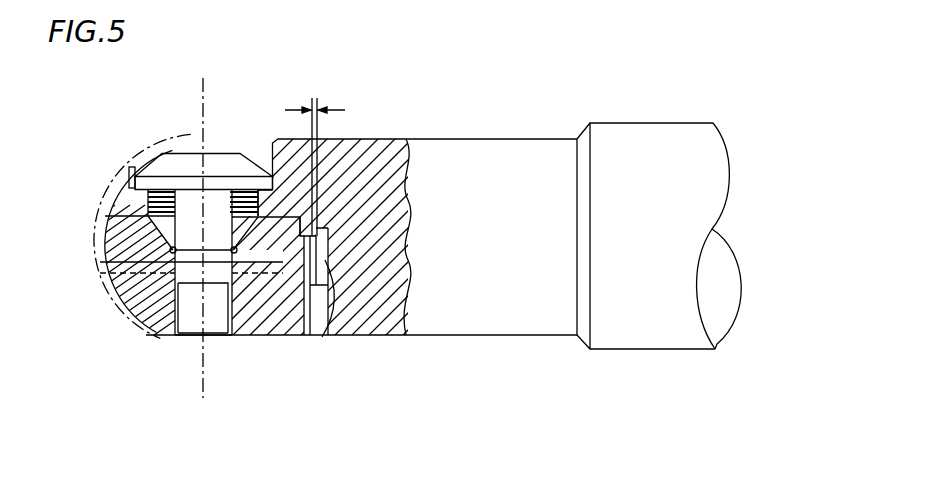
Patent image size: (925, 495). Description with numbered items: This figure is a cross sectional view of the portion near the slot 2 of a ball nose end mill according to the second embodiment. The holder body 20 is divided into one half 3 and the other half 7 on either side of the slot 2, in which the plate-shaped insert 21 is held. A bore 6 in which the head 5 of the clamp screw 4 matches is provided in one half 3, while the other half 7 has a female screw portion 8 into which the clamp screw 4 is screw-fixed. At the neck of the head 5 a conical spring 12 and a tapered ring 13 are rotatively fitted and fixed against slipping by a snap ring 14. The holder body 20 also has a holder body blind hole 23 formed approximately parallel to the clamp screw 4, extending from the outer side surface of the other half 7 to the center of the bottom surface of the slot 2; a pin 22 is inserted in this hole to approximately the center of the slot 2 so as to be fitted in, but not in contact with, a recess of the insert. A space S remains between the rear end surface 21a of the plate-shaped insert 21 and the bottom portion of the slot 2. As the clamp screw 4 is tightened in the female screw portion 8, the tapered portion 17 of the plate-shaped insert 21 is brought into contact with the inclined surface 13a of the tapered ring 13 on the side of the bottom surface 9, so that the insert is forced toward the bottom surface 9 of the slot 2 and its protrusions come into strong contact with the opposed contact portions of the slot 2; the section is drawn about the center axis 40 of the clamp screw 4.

The slot 2 is at (100, 259).
The one half 3 is at (124, 193).
The clamp screw 4 is at (190, 327).
The head 5 is at (173, 162).
The bore 6 is at (270, 150).
The other half 7 is at (115, 297).
The female screw portion 8 is at (224, 313).
The bottom surface 9 is at (312, 240).
The conical spring 12 is at (163, 200).
The tapered ring 13 is at (128, 212).
The inclined surface 13a is at (145, 237).
The snap ring 14 is at (165, 273).
The tapered portion 17 is at (241, 253).
The holder body 20 is at (488, 308).
The plate-shaped insert 21 is at (118, 246).
The rear end surface 21a is at (336, 220).
The pin 22 is at (345, 317).
The holder body blind hole 23 is at (322, 337).
The center axis 40 is at (203, 237).
The space S is at (315, 158).